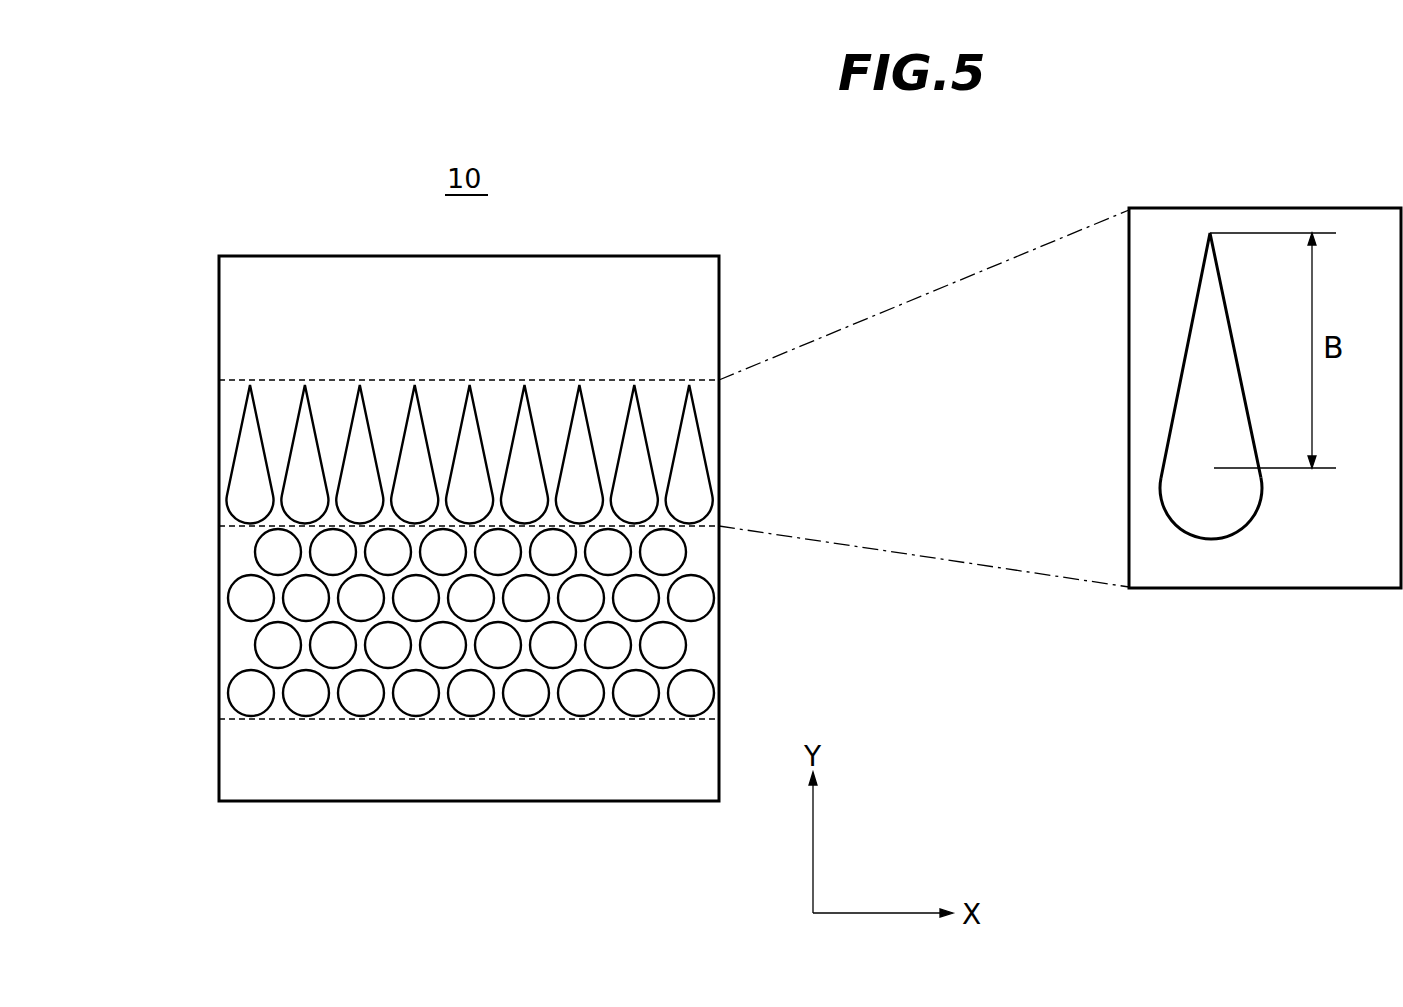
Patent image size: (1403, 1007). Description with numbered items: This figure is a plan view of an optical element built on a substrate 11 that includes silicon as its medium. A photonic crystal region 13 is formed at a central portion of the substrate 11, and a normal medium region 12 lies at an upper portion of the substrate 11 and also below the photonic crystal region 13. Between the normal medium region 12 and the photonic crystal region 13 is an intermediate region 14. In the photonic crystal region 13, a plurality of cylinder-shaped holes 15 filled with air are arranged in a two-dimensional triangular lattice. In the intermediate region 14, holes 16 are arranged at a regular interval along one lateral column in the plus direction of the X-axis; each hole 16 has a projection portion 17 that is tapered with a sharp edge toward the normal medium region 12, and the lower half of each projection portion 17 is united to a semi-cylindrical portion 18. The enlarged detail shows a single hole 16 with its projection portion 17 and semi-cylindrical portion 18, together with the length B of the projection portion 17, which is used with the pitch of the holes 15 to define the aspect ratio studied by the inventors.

The substrate 11 is at (219, 303).
The normal medium region 12 is at (689, 312).
The photonic crystal region 13 is at (455, 622).
The intermediate region 14 is at (688, 386).
The holes 15 is at (248, 602).
The holes 16 is at (247, 508).
The projection portions 17 is at (1182, 365).
The semi-cylindrical portions 18 is at (1157, 481).